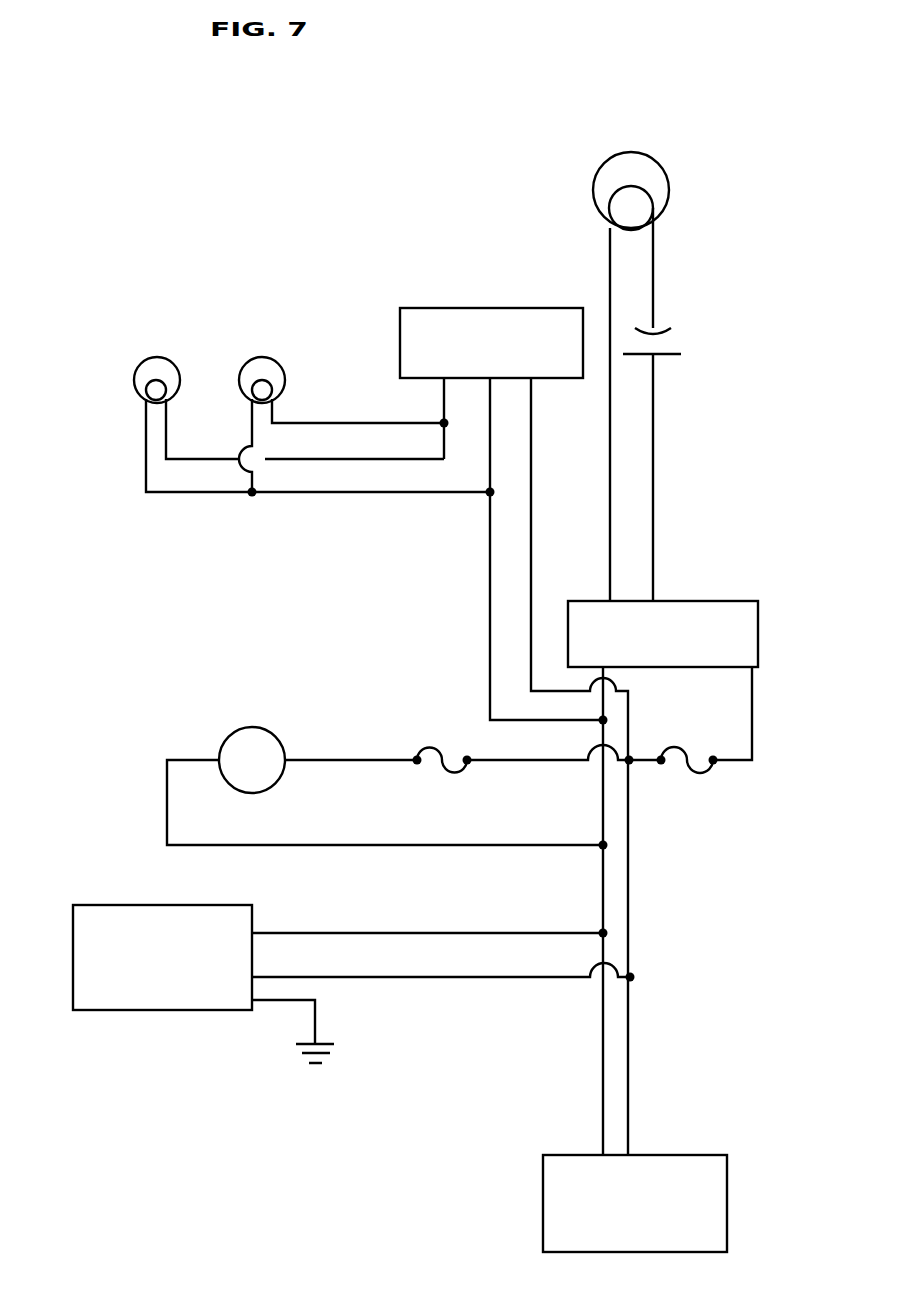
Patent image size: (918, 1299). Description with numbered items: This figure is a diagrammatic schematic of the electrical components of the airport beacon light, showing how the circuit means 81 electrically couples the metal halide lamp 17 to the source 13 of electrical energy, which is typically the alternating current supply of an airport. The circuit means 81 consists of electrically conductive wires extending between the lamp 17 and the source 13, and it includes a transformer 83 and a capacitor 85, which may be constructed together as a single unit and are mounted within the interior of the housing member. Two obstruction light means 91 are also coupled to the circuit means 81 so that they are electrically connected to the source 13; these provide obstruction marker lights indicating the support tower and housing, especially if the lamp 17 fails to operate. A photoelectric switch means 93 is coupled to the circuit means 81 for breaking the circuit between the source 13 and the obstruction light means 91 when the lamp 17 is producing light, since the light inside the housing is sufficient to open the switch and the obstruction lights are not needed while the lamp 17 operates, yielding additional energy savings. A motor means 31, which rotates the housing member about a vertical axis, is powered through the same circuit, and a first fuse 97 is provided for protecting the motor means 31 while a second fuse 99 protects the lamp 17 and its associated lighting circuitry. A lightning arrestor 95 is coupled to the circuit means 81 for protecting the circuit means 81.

The source of electrical energy 13 is at (720, 1206).
The metal halide lamp 17 is at (700, 168).
The motor means 31 is at (237, 737).
The circuit means 81 is at (170, 200).
The transformer 83 is at (737, 609).
The capacitor 85 is at (702, 339).
The obstruction light means 91 is at (143, 343).
The photoelectric switch means 93 is at (485, 313).
The lightning arrestor 95 is at (104, 1003).
The first fuse 97 is at (423, 793).
The second fuse 99 is at (709, 795).